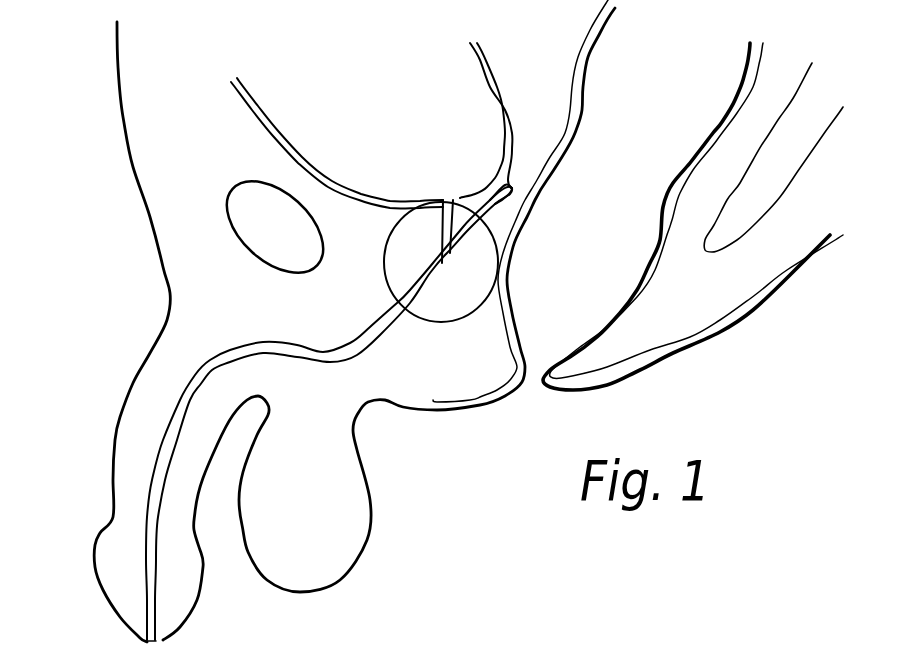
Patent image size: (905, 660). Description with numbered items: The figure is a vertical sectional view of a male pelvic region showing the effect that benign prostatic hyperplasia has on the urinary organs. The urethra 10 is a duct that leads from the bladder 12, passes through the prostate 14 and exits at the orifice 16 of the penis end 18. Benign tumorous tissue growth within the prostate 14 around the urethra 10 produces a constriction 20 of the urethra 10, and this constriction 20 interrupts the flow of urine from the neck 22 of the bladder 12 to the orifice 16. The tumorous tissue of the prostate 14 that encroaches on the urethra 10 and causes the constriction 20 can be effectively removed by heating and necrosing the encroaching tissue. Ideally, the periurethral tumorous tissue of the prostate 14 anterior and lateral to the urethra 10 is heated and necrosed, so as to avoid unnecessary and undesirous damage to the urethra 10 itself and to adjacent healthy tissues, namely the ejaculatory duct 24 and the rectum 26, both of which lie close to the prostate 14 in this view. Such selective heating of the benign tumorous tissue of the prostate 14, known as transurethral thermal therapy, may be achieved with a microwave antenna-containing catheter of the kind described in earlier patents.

The urethra 10 is at (208, 358).
The bladder 12 is at (315, 112).
The prostate 14 is at (450, 273).
The orifice 16 is at (150, 643).
The penis end 18 is at (108, 607).
The constriction 20 is at (437, 257).
The neck 22 is at (453, 200).
The ejaculatory duct 24 is at (476, 233).
The rectum 26 is at (557, 308).